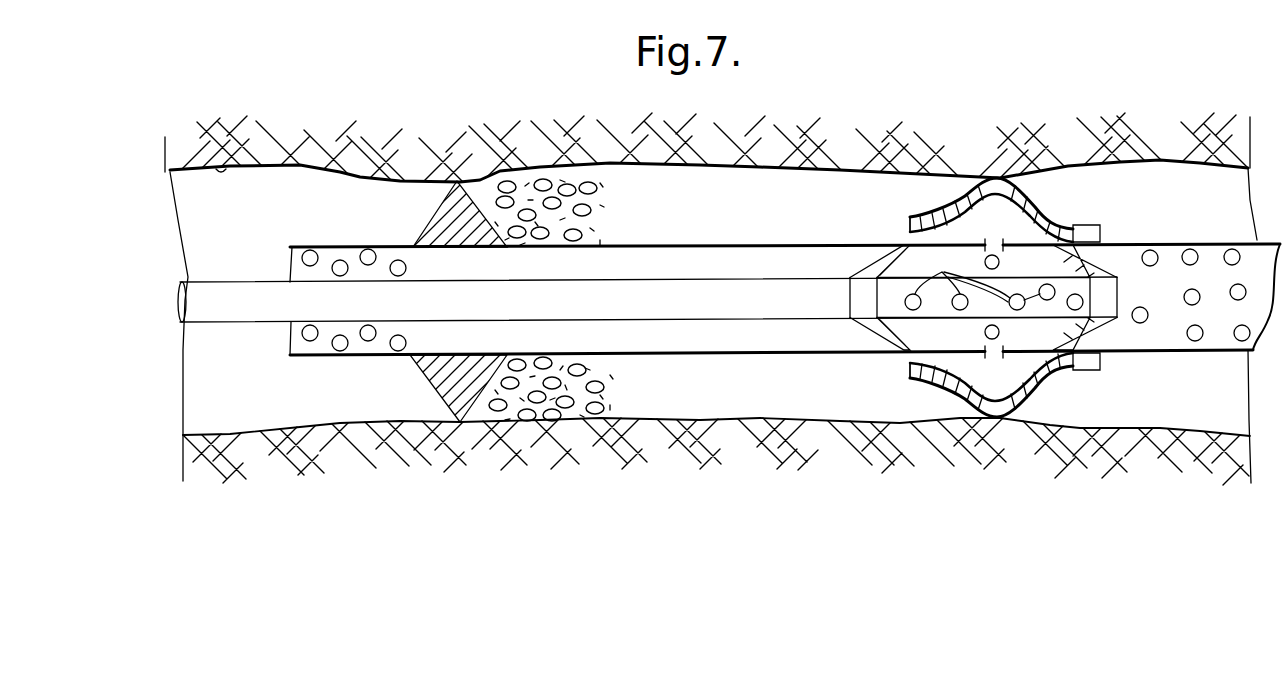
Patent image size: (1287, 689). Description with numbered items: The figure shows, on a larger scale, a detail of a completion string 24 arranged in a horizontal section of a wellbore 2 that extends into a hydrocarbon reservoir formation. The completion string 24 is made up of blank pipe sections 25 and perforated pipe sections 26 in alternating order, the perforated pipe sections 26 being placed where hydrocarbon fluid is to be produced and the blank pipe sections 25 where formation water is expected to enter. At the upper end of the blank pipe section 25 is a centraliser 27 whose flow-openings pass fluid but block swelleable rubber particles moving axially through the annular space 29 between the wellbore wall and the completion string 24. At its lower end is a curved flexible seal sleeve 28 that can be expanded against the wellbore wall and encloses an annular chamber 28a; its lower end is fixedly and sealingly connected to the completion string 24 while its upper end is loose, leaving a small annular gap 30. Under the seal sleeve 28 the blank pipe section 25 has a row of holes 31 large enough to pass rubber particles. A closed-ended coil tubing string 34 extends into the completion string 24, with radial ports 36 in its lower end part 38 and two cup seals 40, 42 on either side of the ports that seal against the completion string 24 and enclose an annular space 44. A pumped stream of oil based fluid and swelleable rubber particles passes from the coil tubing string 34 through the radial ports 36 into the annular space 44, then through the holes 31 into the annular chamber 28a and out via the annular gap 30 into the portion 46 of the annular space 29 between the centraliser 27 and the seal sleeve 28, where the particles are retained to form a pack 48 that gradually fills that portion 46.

The wellbore 2 is at (232, 163).
The completion string 24 is at (622, 246).
The blank pipe section 25 is at (710, 246).
The perforated pipe section 26 is at (328, 246).
The centraliser 27 is at (457, 179).
The flexible seal sleeve 28 is at (1014, 422).
The annular chamber 28a is at (998, 204).
The annular space 29 is at (335, 403).
The annular gap 30 is at (910, 237).
The holes 31 is at (999, 262).
The coil tubing string 34 is at (227, 323).
The radial ports 36 is at (942, 272).
The lower end part 38 is at (980, 319).
The cup seal 40 is at (866, 330).
The cup seal 42 is at (1101, 338).
The annular space 44 is at (920, 342).
The annular space portion 46 is at (682, 398).
The pack 48 is at (540, 400).